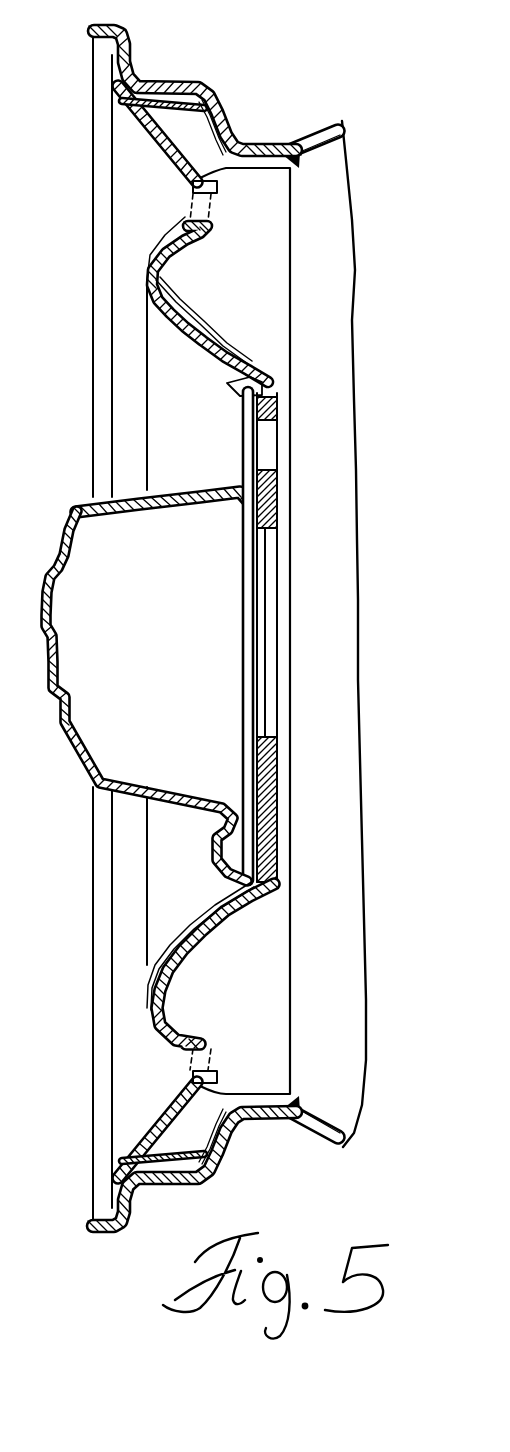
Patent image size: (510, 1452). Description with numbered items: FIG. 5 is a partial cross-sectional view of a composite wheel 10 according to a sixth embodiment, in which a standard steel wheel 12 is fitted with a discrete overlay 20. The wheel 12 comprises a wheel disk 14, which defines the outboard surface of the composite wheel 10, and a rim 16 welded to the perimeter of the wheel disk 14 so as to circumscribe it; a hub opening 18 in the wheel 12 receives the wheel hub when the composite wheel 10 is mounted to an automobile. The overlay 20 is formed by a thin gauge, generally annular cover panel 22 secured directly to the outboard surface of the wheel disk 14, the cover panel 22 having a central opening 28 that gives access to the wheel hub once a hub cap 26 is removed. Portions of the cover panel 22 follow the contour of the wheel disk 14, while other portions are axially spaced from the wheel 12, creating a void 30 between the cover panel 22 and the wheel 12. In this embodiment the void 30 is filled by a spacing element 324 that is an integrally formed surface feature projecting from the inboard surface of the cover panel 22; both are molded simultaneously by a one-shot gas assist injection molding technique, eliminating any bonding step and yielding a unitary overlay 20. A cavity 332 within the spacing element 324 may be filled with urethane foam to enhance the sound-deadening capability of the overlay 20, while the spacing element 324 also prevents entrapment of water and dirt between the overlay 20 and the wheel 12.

The composite wheel 10 is at (242, 620).
The wheel 12 is at (369, 811).
The wheel disk 14 is at (230, 921).
The rim 16 is at (323, 130).
The hub opening 18 is at (262, 527).
The overlay 20 is at (173, 912).
The cover panel 22 is at (153, 1013).
The hub cap 26 is at (72, 505).
The central opening 28 is at (258, 870).
The void 30 is at (227, 120).
The spacing element 324 is at (153, 92).
The cavity 332 is at (207, 97).